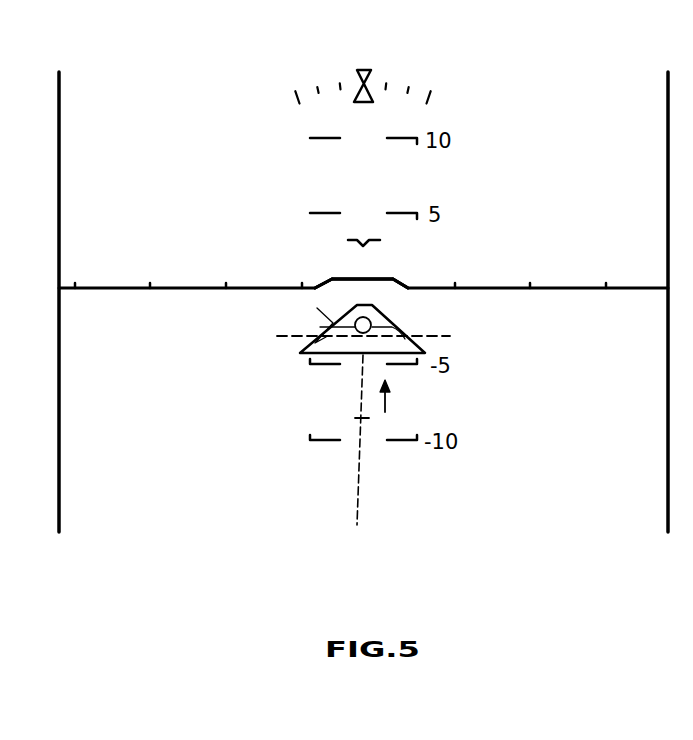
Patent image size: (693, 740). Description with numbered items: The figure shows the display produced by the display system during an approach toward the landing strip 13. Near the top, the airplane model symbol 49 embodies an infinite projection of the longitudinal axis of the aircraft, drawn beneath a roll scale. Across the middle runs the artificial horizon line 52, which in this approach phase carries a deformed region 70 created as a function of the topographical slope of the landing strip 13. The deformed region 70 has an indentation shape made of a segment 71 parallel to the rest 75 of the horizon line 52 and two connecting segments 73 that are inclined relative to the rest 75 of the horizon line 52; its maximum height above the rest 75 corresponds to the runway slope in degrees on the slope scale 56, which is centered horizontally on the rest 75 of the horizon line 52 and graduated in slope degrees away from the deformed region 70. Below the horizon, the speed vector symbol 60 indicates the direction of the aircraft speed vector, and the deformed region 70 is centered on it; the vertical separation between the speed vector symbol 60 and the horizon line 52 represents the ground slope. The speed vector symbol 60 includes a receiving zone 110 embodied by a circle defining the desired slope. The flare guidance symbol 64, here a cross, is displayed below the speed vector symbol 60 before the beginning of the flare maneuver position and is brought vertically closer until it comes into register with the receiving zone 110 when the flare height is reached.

The landing strip 13 is at (392, 323).
The model symbol 49 is at (363, 238).
The artificial horizon line 52 is at (137, 287).
The slope scale 56 is at (403, 212).
The speed vector symbol 60 is at (414, 336).
The flare guidance symbol 64 is at (365, 419).
The deformed region 70 is at (330, 279).
The segment 71 is at (343, 281).
The connecting segments 73 is at (318, 283).
The rest of the horizon line 75 is at (214, 287).
The receiving zone 110 is at (357, 334).